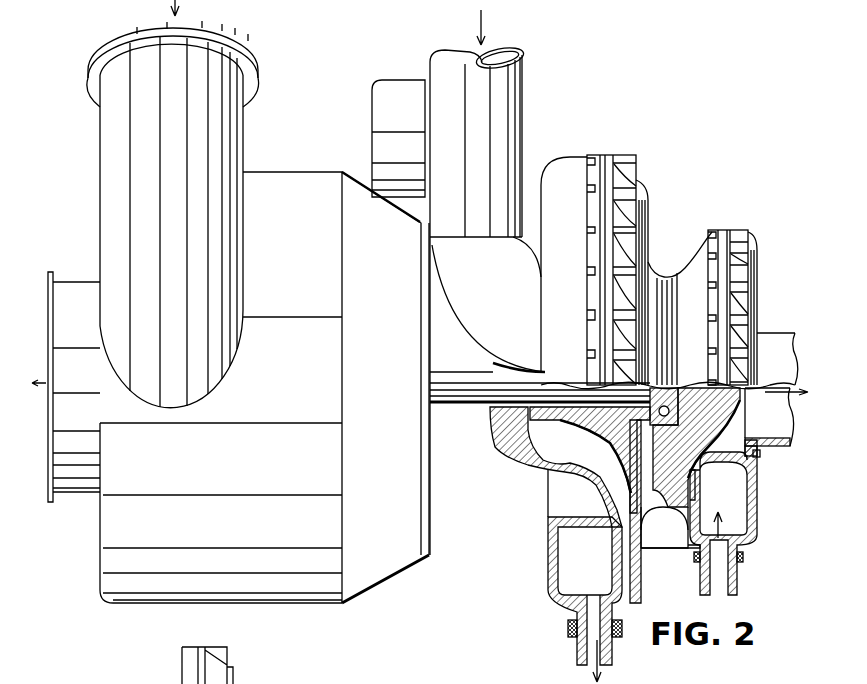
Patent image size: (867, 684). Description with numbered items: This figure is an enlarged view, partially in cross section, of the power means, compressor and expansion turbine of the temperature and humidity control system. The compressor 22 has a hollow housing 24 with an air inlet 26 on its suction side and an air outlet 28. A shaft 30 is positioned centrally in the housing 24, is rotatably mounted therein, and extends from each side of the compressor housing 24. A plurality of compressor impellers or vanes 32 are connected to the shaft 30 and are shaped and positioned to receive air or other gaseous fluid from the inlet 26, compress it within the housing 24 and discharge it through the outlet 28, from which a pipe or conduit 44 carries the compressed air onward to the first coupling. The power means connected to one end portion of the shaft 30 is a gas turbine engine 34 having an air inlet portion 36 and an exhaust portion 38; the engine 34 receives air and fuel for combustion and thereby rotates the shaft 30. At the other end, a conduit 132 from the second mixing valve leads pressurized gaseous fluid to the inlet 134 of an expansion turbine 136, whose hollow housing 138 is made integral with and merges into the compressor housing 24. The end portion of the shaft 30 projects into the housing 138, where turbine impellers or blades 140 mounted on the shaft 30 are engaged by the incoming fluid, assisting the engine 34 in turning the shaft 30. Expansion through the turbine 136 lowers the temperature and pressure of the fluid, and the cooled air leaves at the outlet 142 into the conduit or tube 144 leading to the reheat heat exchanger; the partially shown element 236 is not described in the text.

The compressor 22 is at (603, 137).
The hollow housing 24 is at (641, 185).
The air inlet 26 is at (497, 304).
The air outlet 28 is at (568, 630).
The shaft 30 is at (447, 377).
The compressor impellers or vanes 32 is at (547, 473).
The gas turbine engine 34 is at (250, 534).
The air inlet portion 36 is at (373, 557).
The exhaust portion 38 is at (82, 462).
The pipe or conduit 44 is at (577, 645).
The conduit 132 is at (735, 583).
The inlet 134 is at (745, 580).
The expansion turbine 136 is at (748, 203).
The hollow housing 138 is at (695, 257).
The turbine impellers or blades 140 is at (710, 425).
The outlet 142 is at (741, 410).
The conduit or tube 144 is at (770, 336).
The turbine wheel 236 is at (182, 660).